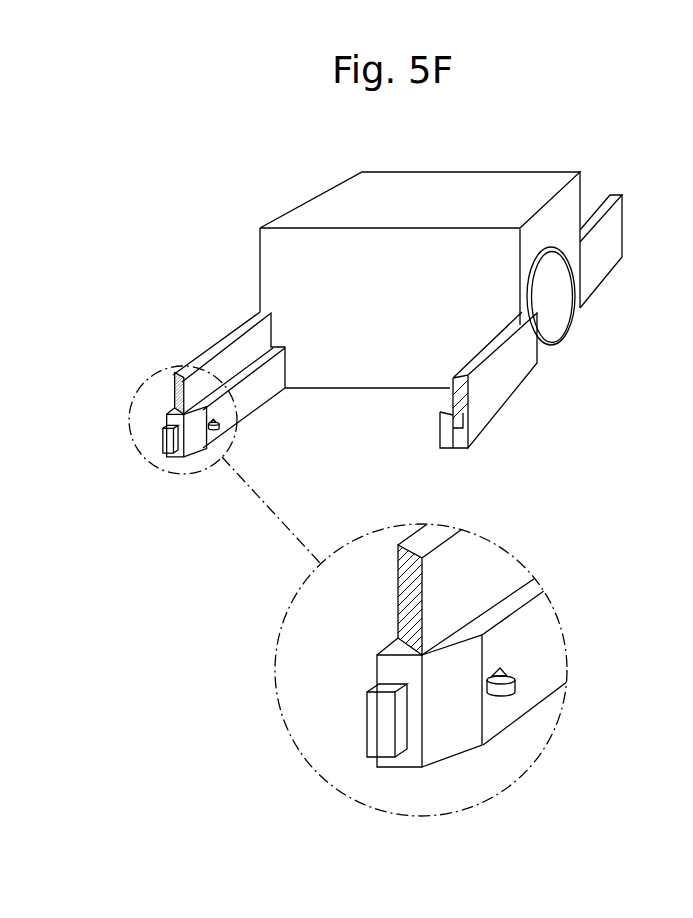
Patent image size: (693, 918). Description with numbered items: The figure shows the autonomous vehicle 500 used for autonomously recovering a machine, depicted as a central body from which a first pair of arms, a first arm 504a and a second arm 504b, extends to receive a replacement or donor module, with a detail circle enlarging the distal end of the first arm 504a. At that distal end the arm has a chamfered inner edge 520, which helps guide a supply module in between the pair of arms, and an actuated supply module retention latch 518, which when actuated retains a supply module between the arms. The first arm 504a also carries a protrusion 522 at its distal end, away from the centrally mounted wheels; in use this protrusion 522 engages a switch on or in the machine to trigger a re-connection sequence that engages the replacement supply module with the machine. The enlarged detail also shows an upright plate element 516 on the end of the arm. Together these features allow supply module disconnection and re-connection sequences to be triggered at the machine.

The autonomous vehicle 500 is at (219, 195).
The first arm 504a is at (232, 356).
The second arm of first pair of arms 504b is at (495, 402).
The plate 516 is at (401, 573).
The actuated supply module retention latch 518 is at (513, 678).
The chamfered inner edge 520 is at (450, 752).
The protrusion 522 is at (368, 735).